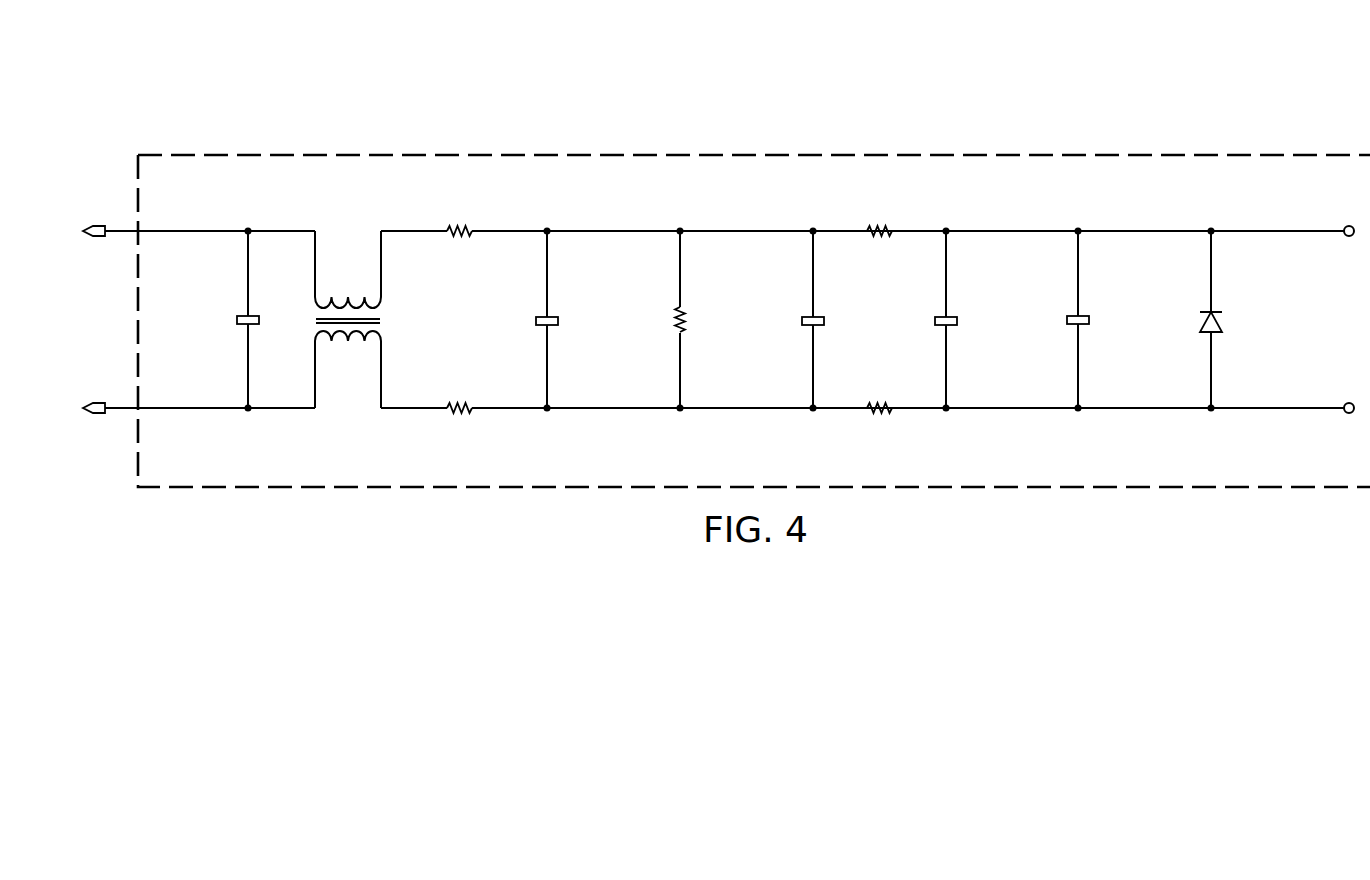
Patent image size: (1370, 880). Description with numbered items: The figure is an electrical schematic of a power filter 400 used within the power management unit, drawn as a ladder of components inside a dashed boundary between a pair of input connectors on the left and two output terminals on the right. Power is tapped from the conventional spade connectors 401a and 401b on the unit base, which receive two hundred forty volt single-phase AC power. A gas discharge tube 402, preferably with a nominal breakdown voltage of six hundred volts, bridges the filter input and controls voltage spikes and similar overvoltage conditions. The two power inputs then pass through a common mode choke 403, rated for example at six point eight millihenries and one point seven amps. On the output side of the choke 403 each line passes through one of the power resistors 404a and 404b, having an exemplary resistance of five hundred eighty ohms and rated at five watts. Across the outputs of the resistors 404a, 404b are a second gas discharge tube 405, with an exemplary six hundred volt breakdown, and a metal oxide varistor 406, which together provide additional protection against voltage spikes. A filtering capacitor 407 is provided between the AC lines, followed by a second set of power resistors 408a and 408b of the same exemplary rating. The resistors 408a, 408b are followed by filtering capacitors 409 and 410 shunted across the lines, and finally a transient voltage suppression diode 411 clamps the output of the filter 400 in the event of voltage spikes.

The power filter 400 is at (992, 95).
The spade connector 401a is at (100, 225).
The spade connector 401b is at (100, 414).
The gas discharge tube 402 is at (237, 320).
The common mode choke 403 is at (355, 362).
The power resistor 404a is at (452, 225).
The power resistor 404b is at (452, 414).
The second gas discharge tube 405 is at (536, 321).
The metal oxide varistor 406 is at (675, 320).
The filtering capacitor 407 is at (802, 321).
The power resistor 408a is at (882, 226).
The power resistor 408b is at (882, 414).
The filtering capacitor 409 is at (957, 321).
The filtering capacitor 410 is at (1089, 320).
The transient voltage suppression diode 411 is at (1222, 312).